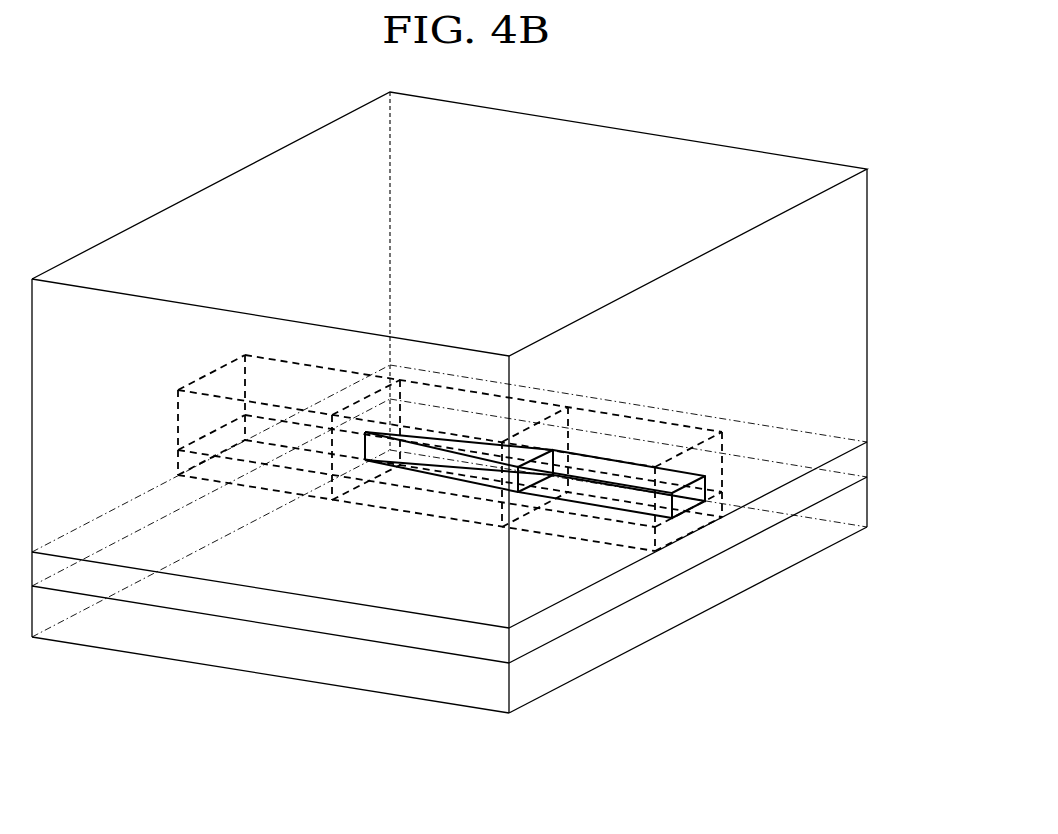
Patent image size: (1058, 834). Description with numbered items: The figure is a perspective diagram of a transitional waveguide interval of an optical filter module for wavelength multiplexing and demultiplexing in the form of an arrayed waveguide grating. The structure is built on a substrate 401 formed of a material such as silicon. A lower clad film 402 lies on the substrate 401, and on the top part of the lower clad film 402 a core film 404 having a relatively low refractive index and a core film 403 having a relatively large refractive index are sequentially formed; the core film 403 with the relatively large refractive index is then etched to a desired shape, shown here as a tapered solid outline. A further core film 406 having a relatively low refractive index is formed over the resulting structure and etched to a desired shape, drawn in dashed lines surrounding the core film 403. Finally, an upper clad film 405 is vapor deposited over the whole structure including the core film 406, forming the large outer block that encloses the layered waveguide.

The substrate 401 is at (186, 636).
The lower clad film 402 is at (288, 615).
The core film having a relatively large refractive index 403 is at (680, 501).
The core film having a relatively low refractive index 404 is at (671, 529).
The upper clad film 405 is at (818, 323).
The core film having a relatively low refractive index 406 is at (707, 461).